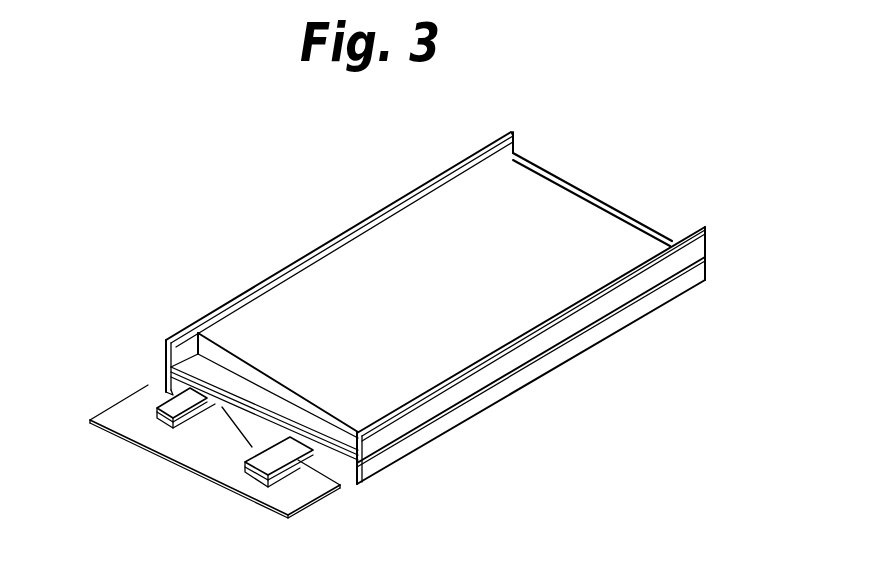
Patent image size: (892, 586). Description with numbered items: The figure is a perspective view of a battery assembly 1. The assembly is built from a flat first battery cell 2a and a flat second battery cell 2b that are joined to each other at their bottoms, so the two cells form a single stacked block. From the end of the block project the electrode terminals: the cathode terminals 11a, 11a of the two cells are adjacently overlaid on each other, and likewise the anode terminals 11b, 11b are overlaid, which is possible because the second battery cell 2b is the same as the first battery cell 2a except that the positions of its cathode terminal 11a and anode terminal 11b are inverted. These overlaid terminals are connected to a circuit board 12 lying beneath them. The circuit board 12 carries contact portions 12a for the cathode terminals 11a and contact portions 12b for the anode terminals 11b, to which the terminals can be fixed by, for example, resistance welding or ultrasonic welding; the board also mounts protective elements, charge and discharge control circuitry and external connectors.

The battery assembly 1 is at (334, 197).
The first battery cell 2a is at (565, 207).
The second battery cell 2b is at (641, 299).
The cathode terminal 11a is at (313, 472).
The anode terminal 11b is at (172, 412).
The circuit board 12 is at (207, 461).
The contact portion 12a is at (265, 481).
The contact portion 12b is at (90, 420).